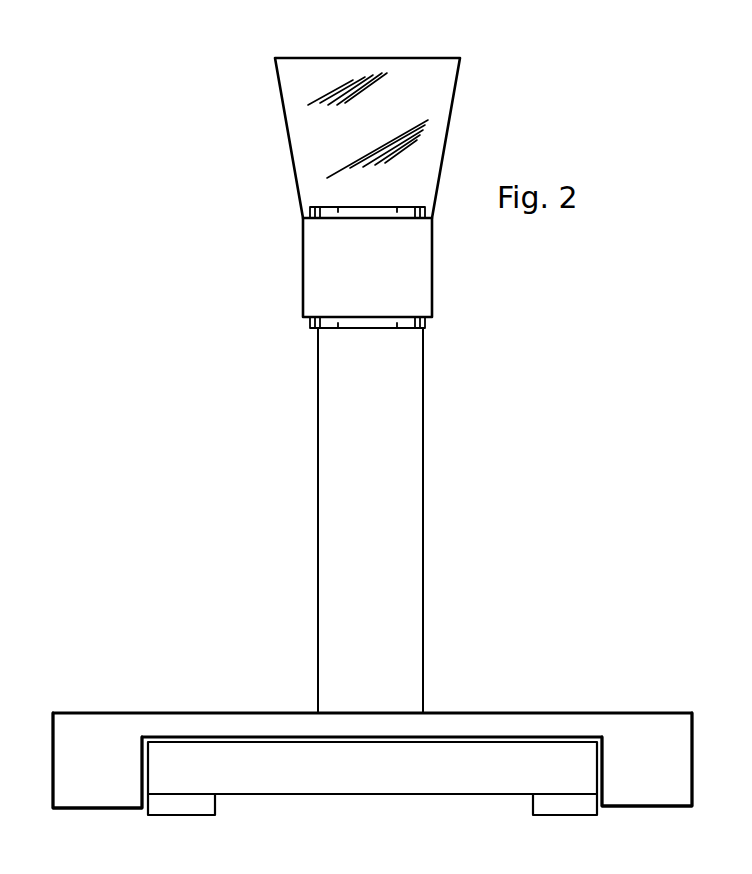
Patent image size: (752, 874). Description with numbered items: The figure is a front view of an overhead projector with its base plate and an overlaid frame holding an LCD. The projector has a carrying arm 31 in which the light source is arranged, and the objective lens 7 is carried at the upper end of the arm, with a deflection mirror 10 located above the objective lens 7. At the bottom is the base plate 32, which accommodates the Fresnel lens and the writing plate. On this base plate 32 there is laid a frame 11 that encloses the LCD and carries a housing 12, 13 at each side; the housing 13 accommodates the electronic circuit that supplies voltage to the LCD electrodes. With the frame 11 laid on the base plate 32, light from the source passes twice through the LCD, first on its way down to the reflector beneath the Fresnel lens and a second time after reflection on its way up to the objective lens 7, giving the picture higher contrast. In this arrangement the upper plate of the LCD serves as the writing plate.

The objective lens 7 is at (362, 324).
The deflection mirror 10 is at (297, 143).
The frame 11 is at (241, 722).
The housing 12 is at (98, 795).
The housing 13 is at (646, 786).
The carrying arm 31 is at (325, 440).
The base plate 32 is at (483, 781).